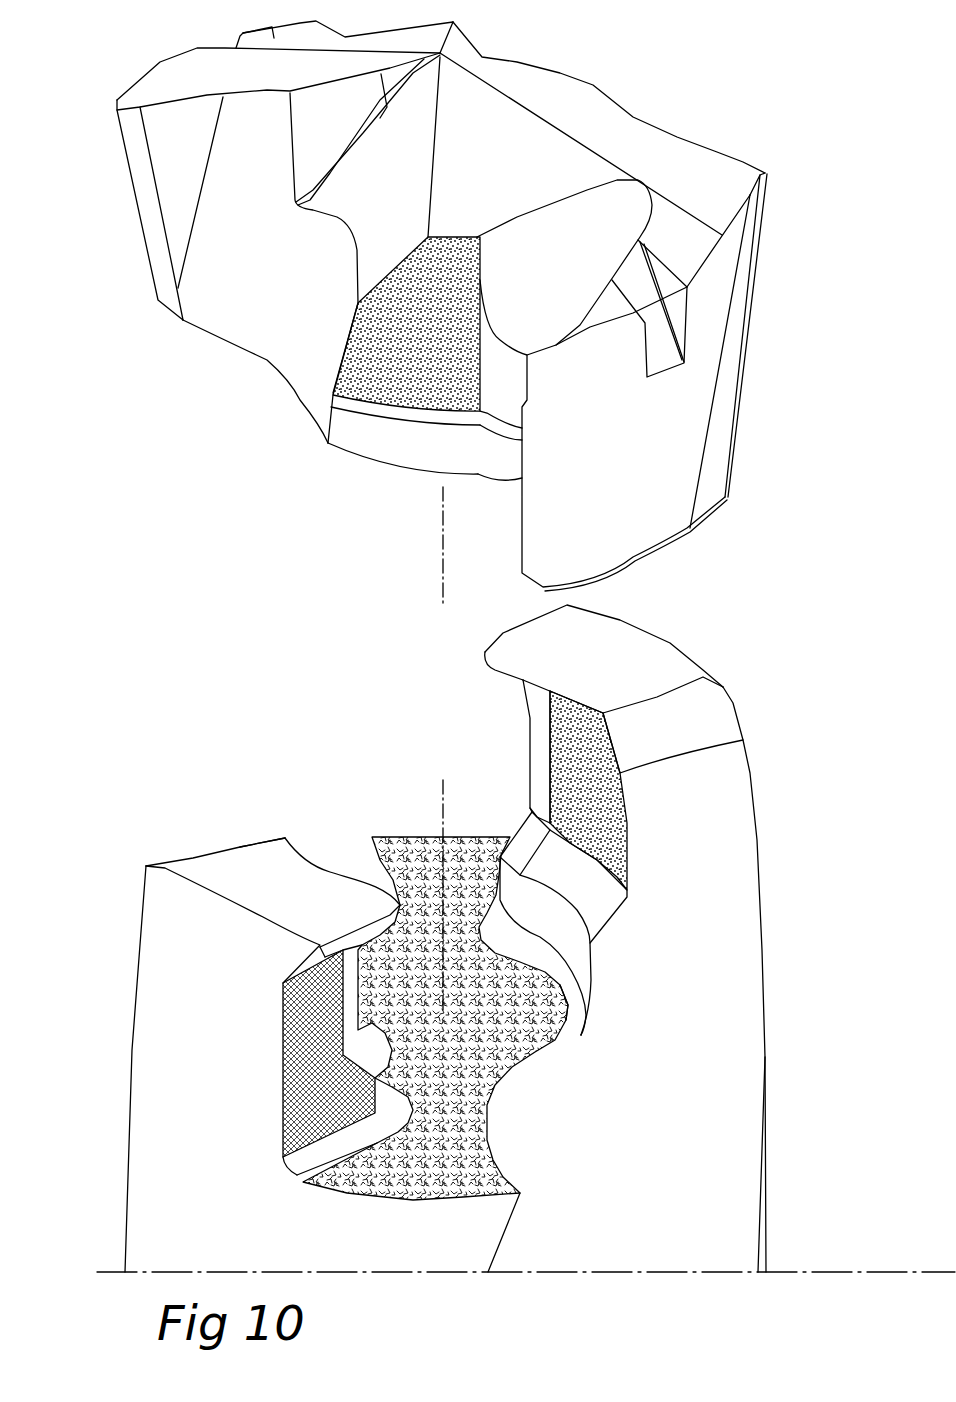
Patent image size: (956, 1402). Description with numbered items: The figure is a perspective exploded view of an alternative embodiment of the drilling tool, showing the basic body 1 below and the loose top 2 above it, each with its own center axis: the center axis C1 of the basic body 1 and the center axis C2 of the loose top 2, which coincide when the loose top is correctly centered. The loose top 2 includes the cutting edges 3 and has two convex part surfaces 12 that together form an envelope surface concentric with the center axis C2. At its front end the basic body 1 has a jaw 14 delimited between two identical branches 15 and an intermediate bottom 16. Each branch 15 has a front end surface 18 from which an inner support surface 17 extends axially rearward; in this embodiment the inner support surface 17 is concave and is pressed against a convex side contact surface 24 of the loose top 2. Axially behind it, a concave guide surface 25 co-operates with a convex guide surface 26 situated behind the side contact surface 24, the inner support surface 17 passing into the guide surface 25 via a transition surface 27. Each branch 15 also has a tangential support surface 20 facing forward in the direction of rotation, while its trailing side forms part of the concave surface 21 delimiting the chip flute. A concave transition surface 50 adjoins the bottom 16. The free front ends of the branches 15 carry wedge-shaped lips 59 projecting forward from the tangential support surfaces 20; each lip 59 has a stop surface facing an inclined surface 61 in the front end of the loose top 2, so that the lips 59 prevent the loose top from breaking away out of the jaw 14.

The basic body 1 is at (437, 938).
The loose top 2 is at (442, 306).
The cutting edges 3 is at (678, 135).
The convex part surfaces 12 is at (608, 465).
The jaw 14 is at (330, 833).
The branches 15 is at (757, 753).
The bottom 16 is at (454, 1046).
The inner support surface 17 is at (574, 791).
The front end surface 18 is at (244, 901).
The tangential support surface 20 is at (302, 1081).
The concave surface 21 is at (619, 1163).
The side contact surfaces 24 is at (404, 363).
The concave guide surfaces 25 is at (532, 925).
The convex guide surfaces 26 is at (391, 460).
The transition surface 27 is at (556, 883).
The concave transition surface 50 is at (573, 988).
The lips 59 is at (308, 955).
The inclined surface 61 is at (555, 348).
The center axis of the basic body C1 is at (443, 785).
The center axis of the loose top C2 is at (443, 580).